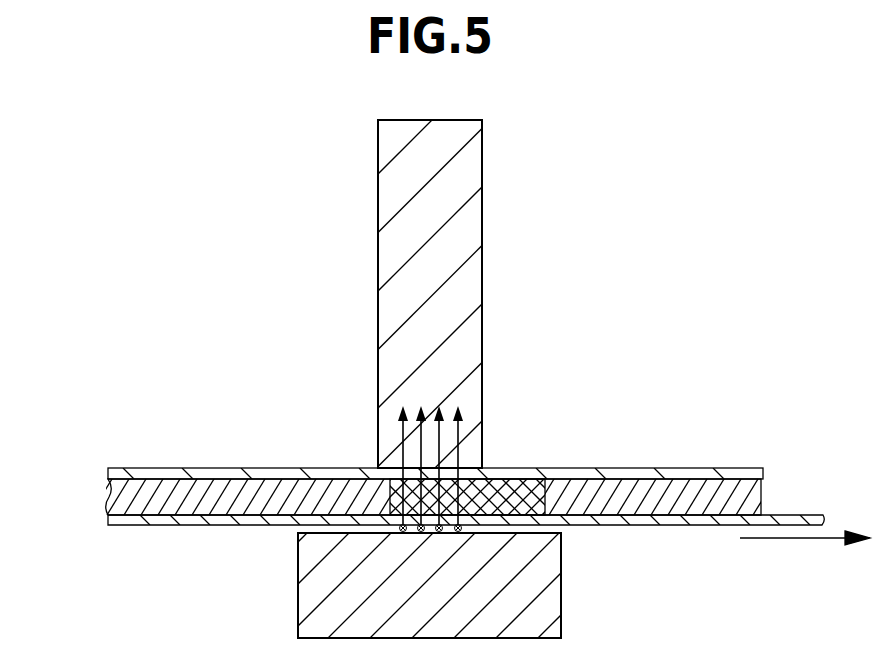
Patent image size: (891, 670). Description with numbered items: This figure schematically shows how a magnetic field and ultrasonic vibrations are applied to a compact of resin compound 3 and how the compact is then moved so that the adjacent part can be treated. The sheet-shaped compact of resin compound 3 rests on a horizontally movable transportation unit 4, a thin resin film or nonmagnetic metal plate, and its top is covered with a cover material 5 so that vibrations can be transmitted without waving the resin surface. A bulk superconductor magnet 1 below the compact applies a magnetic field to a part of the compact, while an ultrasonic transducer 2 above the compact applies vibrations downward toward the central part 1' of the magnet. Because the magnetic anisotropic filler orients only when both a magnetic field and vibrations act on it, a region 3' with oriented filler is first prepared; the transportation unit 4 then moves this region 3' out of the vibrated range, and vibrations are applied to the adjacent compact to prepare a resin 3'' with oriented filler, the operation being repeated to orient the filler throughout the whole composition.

The bulk superconductor magnet 1 is at (443, 585).
The central part of the bulk superconductor magnet 1' is at (517, 494).
The ultrasonic transducer 2 is at (465, 238).
The compact of resin compound 3 is at (399, 497).
The compact of resin compound including the oriented filler 3' is at (649, 468).
The resin in which the filler is oriented 3'' is at (469, 456).
The transportation unit 4 is at (803, 519).
The cover material 5 is at (148, 472).